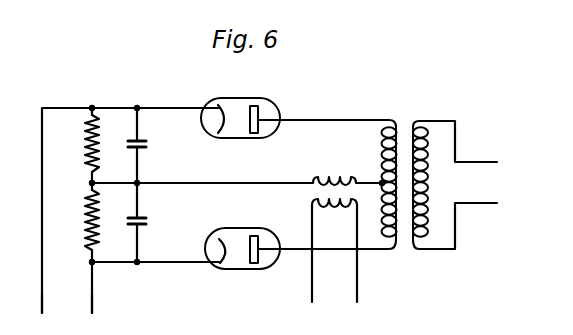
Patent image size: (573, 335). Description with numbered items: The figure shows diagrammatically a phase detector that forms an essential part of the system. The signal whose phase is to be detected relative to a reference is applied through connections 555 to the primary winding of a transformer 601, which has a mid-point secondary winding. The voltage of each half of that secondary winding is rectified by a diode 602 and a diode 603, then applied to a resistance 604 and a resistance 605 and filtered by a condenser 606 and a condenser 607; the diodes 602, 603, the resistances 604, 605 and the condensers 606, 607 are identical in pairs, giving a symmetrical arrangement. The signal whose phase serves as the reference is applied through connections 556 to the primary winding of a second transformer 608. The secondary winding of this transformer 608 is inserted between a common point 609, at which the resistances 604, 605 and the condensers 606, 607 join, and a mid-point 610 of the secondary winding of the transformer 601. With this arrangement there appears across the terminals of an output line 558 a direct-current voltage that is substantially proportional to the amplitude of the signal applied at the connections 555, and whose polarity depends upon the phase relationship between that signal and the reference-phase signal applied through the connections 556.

The transformer 601 is at (400, 128).
The diode 602 is at (243, 103).
The diode 603 is at (241, 264).
The resistance 604 is at (88, 152).
The resistance 605 is at (88, 230).
The condenser 606 is at (147, 148).
The condenser 607 is at (147, 223).
The transformer 608 is at (320, 199).
The common point 609 is at (90, 182).
The mid-point 610 is at (380, 182).
The connections 555 is at (487, 203).
The connections 556 is at (343, 284).
The output line 558 is at (82, 312).